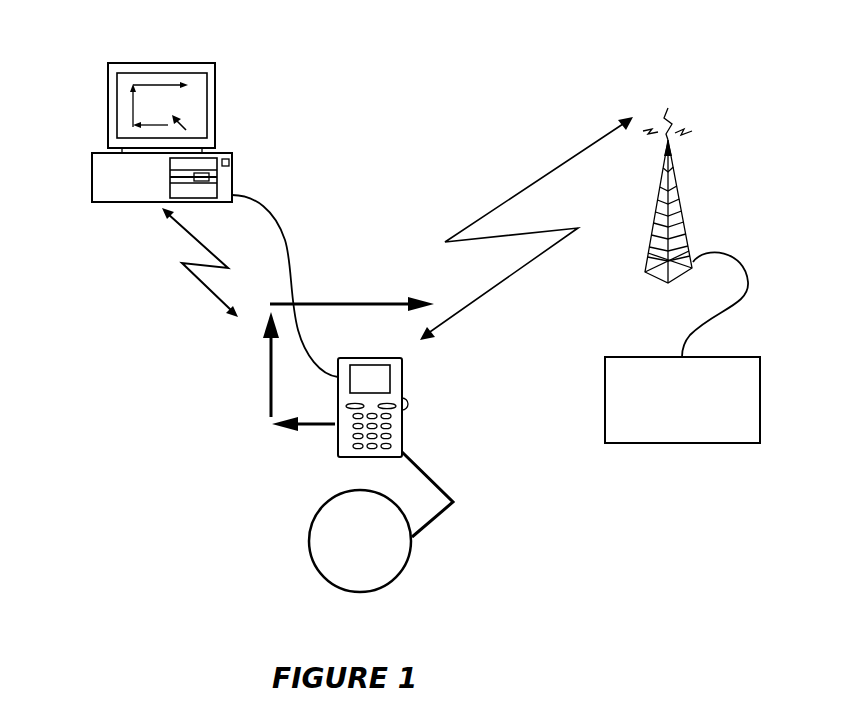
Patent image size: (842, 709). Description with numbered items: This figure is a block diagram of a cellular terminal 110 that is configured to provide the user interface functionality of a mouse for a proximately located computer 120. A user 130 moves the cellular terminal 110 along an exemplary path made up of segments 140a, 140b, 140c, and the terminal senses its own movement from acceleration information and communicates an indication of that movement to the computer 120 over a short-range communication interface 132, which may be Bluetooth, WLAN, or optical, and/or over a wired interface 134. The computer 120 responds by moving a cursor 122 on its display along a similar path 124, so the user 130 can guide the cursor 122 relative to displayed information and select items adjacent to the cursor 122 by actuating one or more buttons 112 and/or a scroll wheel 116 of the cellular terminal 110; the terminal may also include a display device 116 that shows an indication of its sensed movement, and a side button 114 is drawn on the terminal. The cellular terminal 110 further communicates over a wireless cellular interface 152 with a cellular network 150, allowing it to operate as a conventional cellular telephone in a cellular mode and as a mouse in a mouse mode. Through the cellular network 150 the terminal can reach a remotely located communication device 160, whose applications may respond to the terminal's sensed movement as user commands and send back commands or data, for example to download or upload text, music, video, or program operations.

The cellular terminal 110 is at (406, 390).
The buttons 112 is at (390, 433).
The side button 114 is at (407, 405).
The scroll wheel / display device 116 is at (390, 387).
The computer 120 is at (108, 108).
The cursor 122 is at (190, 122).
The path 124 is at (162, 83).
The user 130 is at (365, 592).
The short-range communication interface 132 is at (198, 283).
The wired interface 134 is at (287, 233).
The path 140a is at (297, 427).
The path 140b is at (265, 382).
The path 140c is at (315, 297).
The cellular network 150 is at (682, 218).
The wireless cellular interface 152 is at (517, 192).
The communication device 160 is at (682, 347).